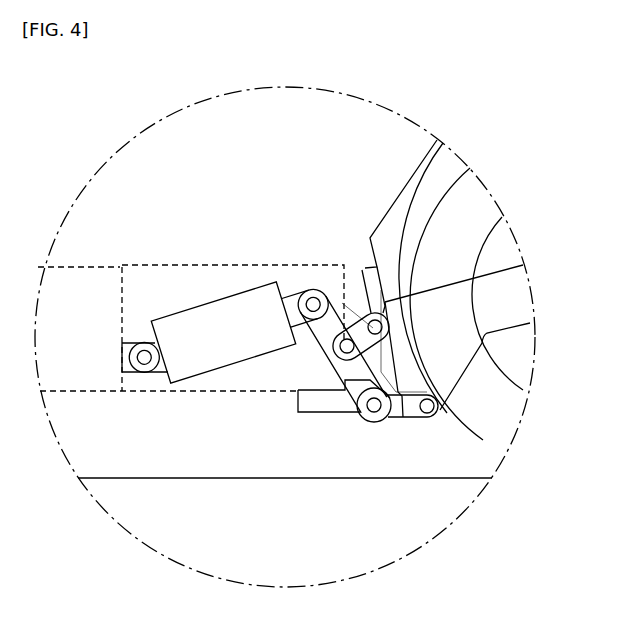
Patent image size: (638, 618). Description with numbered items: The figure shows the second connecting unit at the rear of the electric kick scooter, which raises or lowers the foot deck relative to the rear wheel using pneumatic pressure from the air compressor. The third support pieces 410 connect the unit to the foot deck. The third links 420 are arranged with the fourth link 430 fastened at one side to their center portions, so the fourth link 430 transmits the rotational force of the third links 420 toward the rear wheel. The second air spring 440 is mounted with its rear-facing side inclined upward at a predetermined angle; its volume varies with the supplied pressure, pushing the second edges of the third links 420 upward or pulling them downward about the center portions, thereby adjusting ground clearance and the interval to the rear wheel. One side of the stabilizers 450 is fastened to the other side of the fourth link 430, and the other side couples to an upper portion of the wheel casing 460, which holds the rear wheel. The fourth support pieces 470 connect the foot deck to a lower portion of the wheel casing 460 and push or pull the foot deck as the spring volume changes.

The third support pieces 410 is at (322, 412).
The third links 420 is at (323, 330).
The fourth link 430 is at (364, 267).
The second air spring 440 is at (197, 312).
The stabilizers 450 is at (425, 169).
The wheel casing 460 is at (521, 283).
The fourth support pieces 470 is at (402, 417).